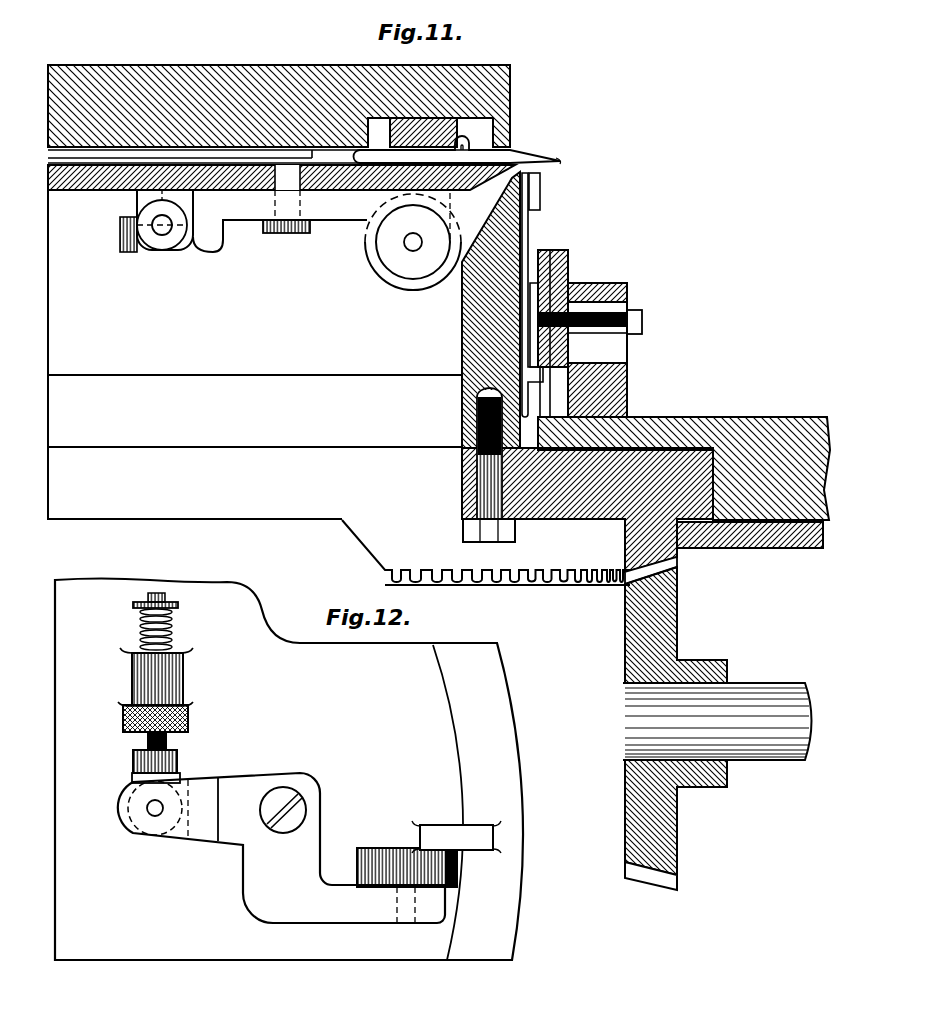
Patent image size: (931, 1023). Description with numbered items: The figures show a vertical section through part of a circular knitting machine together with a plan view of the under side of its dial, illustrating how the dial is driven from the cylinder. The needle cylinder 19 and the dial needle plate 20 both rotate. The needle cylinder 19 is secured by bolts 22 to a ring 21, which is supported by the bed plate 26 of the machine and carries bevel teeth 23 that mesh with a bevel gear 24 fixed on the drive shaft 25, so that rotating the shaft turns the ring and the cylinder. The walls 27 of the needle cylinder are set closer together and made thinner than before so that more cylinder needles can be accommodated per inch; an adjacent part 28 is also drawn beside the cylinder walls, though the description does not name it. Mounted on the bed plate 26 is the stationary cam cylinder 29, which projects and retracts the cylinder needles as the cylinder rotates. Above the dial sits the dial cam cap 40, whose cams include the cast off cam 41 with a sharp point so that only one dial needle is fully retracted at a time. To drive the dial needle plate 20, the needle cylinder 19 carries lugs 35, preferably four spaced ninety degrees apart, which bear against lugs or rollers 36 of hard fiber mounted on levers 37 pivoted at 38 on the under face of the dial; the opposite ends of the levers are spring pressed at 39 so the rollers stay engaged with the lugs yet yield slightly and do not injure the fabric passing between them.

In FIG. 11, the needle cylinder 19 is at (466, 316).
In FIG. 11, the dial needle plate 20 is at (94, 182).
In FIG. 12, the dial needle plate 20 is at (277, 950).
In FIG. 11, the ring 21 is at (585, 507).
In FIG. 11, the bolts 22 is at (468, 532).
In FIG. 11, the bevel teeth 23 is at (678, 568).
In FIG. 11, the bevel gear 24 is at (660, 628).
In FIG. 11, the drive shaft 25 is at (763, 698).
In FIG. 11, the bed plate 26 is at (762, 426).
In FIG. 11, the walls of the needle cylinder 27 is at (539, 254).
In FIG. 11, the spring clip 28 is at (532, 236).
In FIG. 11, the cam cylinder 29 is at (612, 386).
In FIG. 11, the lugs 35 is at (431, 207).
In FIG. 12, the lugs 35 is at (477, 831).
In FIG. 12, the lugs or rollers 36 is at (375, 856).
In FIG. 11, the levers 37 is at (348, 212).
In FIG. 12, the levers 37 is at (318, 806).
In FIG. 11, the pivot 38 is at (279, 233).
In FIG. 12, the pivot 38 is at (281, 790).
In FIG. 12, the spring 39 is at (165, 688).
In FIG. 11, the dial cam cap 40 is at (176, 80).
In FIG. 11, the cast off cam 41 is at (500, 138).